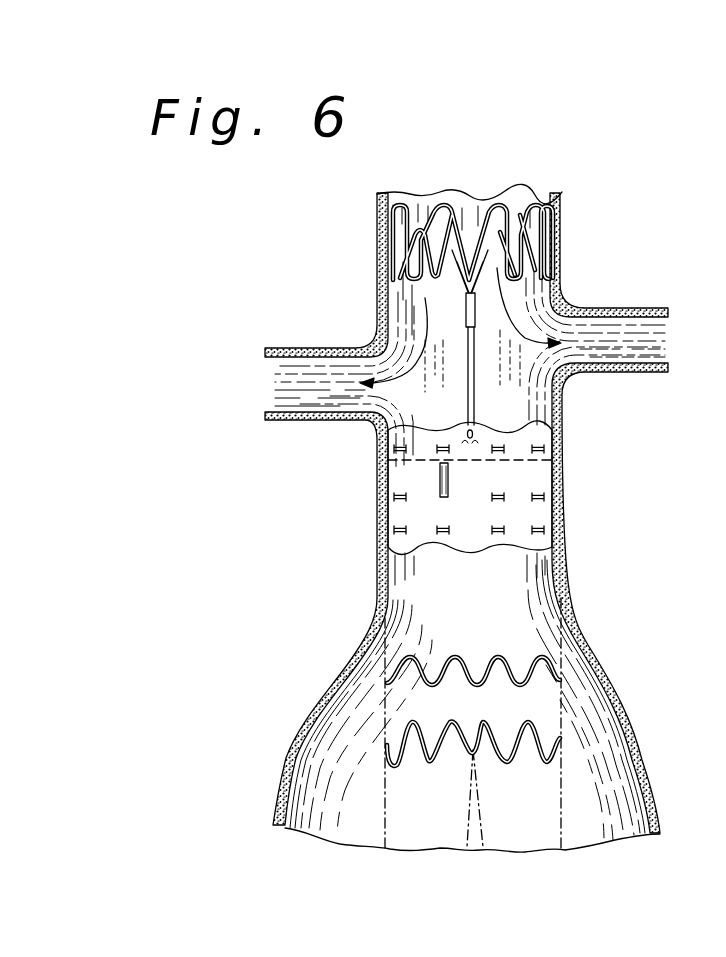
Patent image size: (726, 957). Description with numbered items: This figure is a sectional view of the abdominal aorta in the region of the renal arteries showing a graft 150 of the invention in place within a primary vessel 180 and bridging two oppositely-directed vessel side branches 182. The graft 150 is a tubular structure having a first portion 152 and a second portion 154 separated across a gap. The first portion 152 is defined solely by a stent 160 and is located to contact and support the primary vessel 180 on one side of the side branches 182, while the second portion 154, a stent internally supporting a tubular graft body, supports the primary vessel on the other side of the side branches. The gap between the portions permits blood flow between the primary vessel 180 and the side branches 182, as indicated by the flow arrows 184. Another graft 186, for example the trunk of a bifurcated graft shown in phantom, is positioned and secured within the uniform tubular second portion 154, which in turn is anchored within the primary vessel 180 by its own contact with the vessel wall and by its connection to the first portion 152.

The graft 150 is at (481, 179).
The first portion 152 is at (343, 202).
The second portion 154 is at (370, 425).
The stent 160 is at (542, 266).
The primary vessel 180 is at (560, 421).
The vessel side branches 182 is at (640, 310).
The flow arrows 184 is at (423, 347).
The graft 186 is at (386, 667).